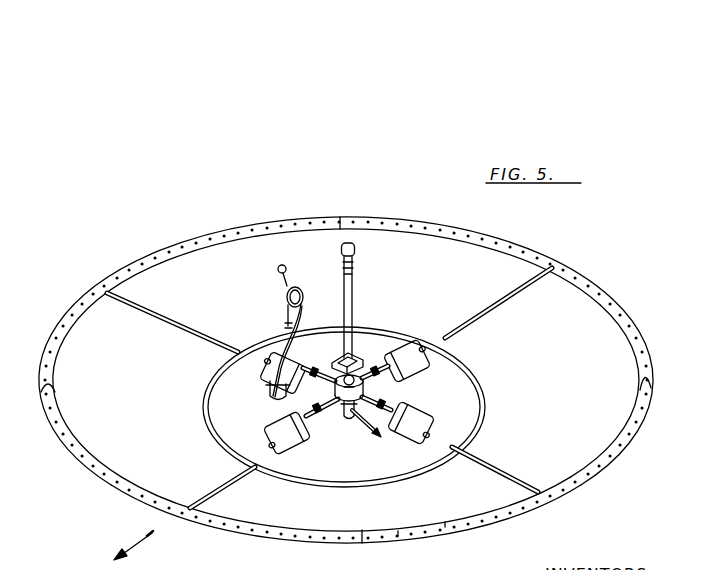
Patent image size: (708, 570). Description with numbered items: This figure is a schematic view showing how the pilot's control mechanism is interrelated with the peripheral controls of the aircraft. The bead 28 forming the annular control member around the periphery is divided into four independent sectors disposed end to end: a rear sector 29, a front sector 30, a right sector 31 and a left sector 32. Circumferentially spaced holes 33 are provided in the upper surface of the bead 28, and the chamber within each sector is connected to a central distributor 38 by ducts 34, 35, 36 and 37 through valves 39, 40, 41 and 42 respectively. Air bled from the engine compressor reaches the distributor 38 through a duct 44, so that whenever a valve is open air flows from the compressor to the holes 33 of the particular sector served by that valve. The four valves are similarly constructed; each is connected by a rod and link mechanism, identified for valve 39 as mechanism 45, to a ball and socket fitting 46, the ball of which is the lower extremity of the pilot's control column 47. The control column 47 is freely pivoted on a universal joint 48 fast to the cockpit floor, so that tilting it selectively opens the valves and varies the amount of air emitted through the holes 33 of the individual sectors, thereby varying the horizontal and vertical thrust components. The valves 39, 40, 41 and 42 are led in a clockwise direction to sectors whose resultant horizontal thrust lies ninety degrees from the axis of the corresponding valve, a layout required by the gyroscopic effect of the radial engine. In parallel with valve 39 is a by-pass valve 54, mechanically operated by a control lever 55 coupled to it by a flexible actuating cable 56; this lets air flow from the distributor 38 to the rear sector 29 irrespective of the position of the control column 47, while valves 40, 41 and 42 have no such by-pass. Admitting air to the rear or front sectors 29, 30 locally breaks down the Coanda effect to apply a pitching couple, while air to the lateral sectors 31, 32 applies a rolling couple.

The bead 28 is at (341, 538).
The rear sector 29 is at (617, 320).
The front sector 30 is at (285, 537).
The right sector 31 is at (62, 343).
The left sector 32 is at (508, 516).
The circumferentially spaced holes 33 is at (445, 523).
The duct 34 is at (498, 307).
The duct 35 is at (230, 488).
The duct 36 is at (170, 318).
The duct 37 is at (497, 478).
The distributor 38 is at (347, 413).
The valve 39 is at (283, 352).
The valve 40 is at (415, 435).
The valve 41 is at (293, 445).
The valve 42 is at (410, 365).
The duct 44 is at (361, 425).
The rod and link mechanism 45 is at (328, 373).
The ball and socket fitting 46 is at (363, 388).
The pilot's control column 47 is at (354, 304).
The universal joint 48 is at (355, 350).
The by-pass valve 54 is at (285, 403).
The control lever 55 is at (279, 270).
The flexible actuating cable 56 is at (287, 320).